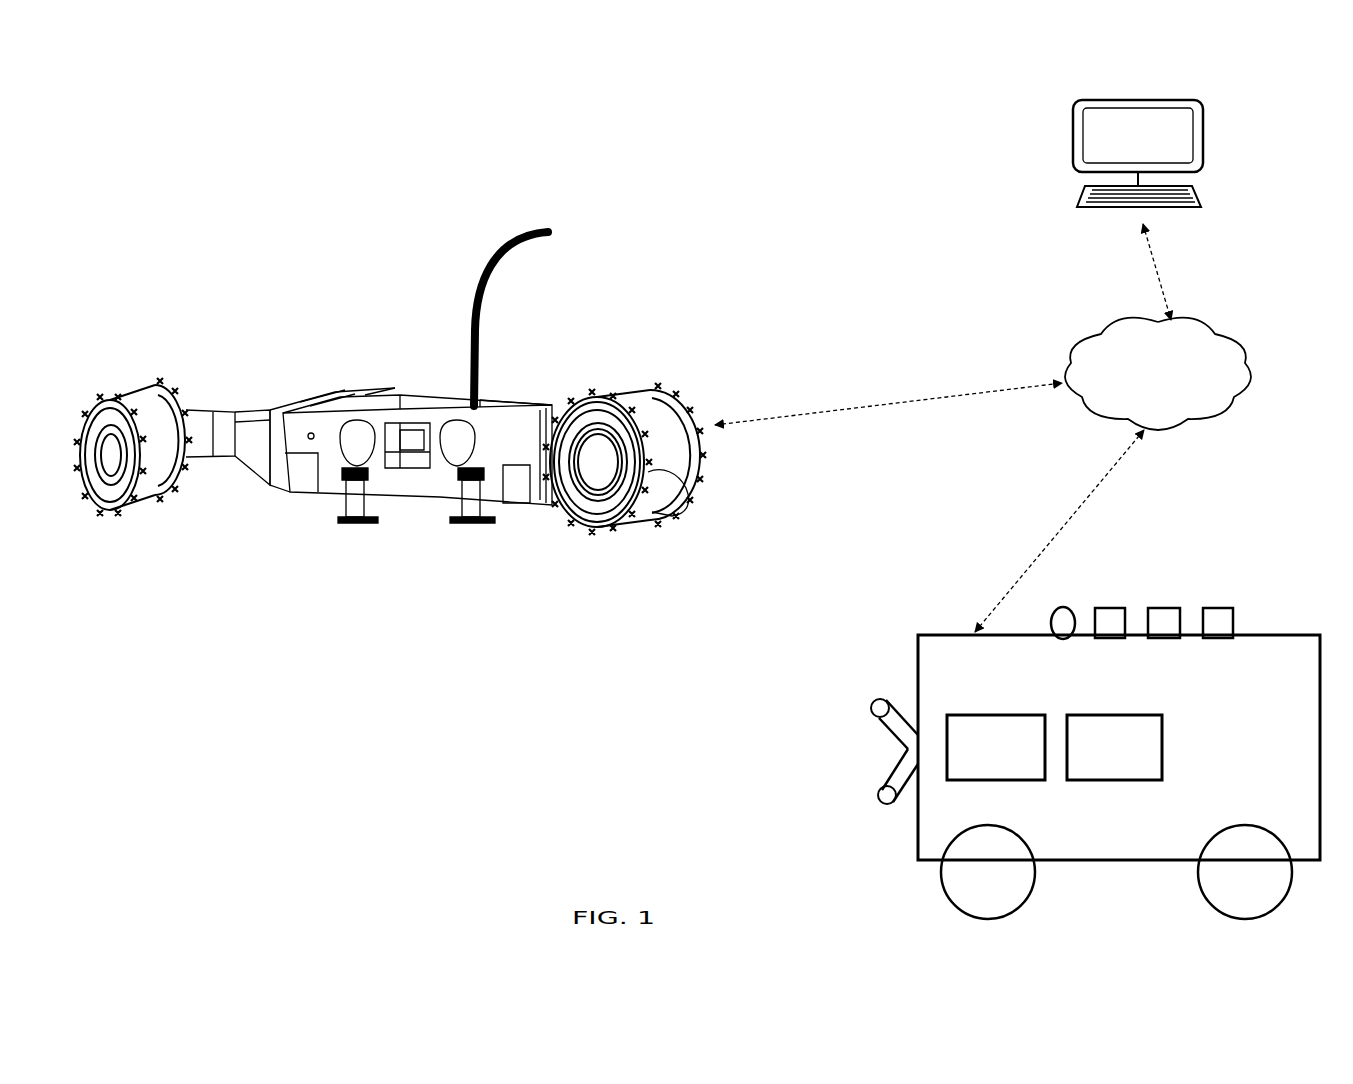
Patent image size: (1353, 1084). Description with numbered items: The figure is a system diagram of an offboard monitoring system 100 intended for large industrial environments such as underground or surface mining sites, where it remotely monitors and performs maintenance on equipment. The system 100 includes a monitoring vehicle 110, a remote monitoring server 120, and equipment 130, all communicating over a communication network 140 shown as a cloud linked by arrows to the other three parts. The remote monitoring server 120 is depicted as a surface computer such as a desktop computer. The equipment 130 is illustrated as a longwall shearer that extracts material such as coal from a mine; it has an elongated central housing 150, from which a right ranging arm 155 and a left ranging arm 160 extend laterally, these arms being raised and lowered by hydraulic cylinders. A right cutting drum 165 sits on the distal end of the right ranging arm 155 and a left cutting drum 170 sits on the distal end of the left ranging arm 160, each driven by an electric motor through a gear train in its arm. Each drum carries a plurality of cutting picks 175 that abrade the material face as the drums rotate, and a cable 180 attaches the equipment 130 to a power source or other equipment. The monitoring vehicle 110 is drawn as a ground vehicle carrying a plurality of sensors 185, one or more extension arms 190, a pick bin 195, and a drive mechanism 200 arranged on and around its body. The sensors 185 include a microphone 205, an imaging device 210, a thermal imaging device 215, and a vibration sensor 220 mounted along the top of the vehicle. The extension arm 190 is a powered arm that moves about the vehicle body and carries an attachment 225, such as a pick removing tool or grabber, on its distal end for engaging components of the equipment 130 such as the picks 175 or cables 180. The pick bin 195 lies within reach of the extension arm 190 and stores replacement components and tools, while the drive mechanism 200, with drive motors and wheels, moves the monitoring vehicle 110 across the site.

The offboard monitoring system 100 is at (218, 755).
The monitoring vehicle 110 is at (948, 640).
The remote monitoring server 120 is at (1200, 132).
The equipment 130 is at (640, 384).
The communication network 140 is at (1076, 333).
The elongated central housing 150 is at (447, 404).
The right ranging arm 155 is at (203, 462).
The left ranging arm 160 is at (548, 522).
The right cutting drum 165 is at (135, 520).
The left cutting drum 170 is at (692, 480).
The cutting picks 175 is at (678, 518).
The cables 180 is at (481, 284).
The plurality of sensors 185 is at (1138, 606).
The extension arm 190 is at (880, 738).
The pick bin 195 is at (996, 747).
The drive mechanism 200 is at (1114, 747).
The microphone 205 is at (1052, 614).
The imaging device 210 is at (1112, 606).
The thermal imaging device 215 is at (1166, 606).
The vibration sensor 220 is at (1216, 606).
The attachment 225 is at (872, 702).